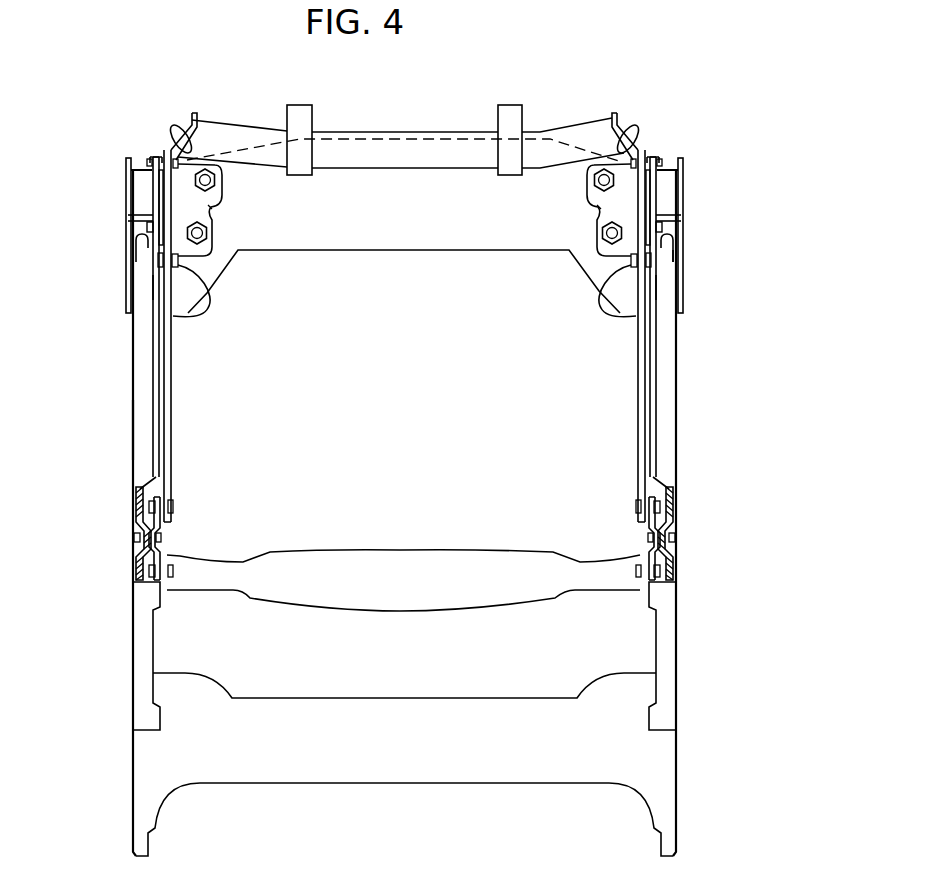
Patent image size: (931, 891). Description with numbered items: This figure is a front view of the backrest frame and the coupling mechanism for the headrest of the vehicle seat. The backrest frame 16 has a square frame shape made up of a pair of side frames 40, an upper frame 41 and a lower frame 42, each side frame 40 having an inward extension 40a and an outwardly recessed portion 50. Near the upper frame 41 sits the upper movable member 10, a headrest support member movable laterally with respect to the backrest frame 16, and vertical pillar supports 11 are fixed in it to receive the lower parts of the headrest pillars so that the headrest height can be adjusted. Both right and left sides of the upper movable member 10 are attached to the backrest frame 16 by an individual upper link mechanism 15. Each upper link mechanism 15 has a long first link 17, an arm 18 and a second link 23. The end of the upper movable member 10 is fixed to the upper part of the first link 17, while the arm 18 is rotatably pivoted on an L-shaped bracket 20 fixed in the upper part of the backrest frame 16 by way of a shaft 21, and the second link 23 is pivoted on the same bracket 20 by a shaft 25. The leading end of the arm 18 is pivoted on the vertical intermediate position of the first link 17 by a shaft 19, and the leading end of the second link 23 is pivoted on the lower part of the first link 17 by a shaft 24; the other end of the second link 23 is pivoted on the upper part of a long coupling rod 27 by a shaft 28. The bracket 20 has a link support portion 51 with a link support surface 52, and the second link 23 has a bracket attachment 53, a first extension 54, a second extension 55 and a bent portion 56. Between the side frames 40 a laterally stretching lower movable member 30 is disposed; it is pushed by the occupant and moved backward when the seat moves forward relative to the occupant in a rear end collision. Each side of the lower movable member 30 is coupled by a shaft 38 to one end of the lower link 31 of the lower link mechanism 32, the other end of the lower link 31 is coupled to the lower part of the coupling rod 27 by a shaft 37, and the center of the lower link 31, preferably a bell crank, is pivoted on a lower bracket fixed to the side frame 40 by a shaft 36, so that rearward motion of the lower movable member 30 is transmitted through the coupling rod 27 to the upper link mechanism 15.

The upper movable member 10 is at (391, 152).
The pillar support 11 is at (304, 121).
The upper link mechanism 15 is at (122, 150).
The backrest frame 16 is at (130, 432).
The first link 17 is at (180, 163).
The arm 18 is at (167, 150).
The shaft 19 is at (200, 198).
The L-shaped bracket 20 is at (157, 210).
The shaft 21 is at (155, 155).
The second link 23 is at (160, 283).
The shaft 24 is at (178, 262).
The shaft 25 is at (150, 228).
The coupling rod 27 is at (166, 394).
The shaft 28 is at (160, 193).
The lower movable member 30 is at (375, 555).
The lower link 31 is at (141, 517).
The lower link mechanism 32 is at (183, 531).
The shaft 36 is at (136, 538).
The shaft 37 is at (173, 504).
The shaft 38 is at (172, 573).
The side frame 40 is at (142, 463).
The inward extension 40a is at (145, 387).
The upper frame 41 is at (397, 256).
The lower frame 42 is at (394, 725).
The outwardly recessed portion 50 is at (137, 255).
The link support portion 51 is at (152, 218).
The link support surface 52 is at (87, 234).
The bracket attachment 53 is at (655, 198).
The first extension 54 is at (652, 250).
The second extension 55 is at (674, 162).
The bent portion 56 is at (657, 248).